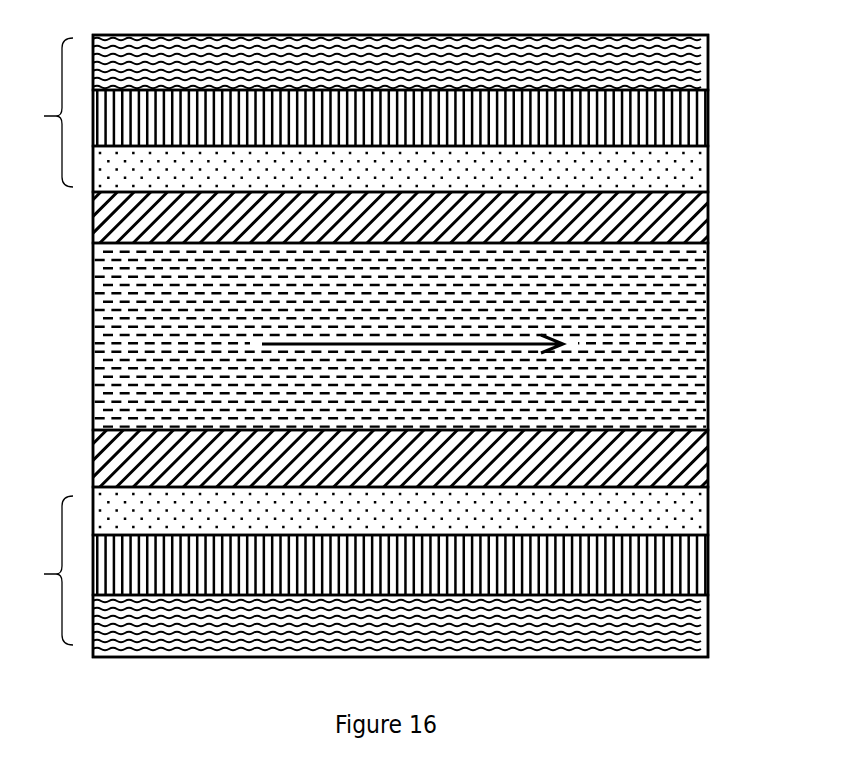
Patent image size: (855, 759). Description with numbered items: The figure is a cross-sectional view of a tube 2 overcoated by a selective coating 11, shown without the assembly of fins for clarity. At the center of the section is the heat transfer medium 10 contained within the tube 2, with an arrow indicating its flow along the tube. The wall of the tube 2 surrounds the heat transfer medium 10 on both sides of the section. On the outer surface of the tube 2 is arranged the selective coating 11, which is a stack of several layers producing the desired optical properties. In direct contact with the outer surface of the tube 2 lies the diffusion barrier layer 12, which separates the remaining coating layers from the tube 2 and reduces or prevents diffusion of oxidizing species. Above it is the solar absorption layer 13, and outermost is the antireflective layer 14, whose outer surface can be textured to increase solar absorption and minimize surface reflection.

The tube 2 is at (708, 230).
The heat transfer medium 10 is at (708, 300).
The selective coating 11 is at (42, 341).
The diffusion barrier layer 12 is at (708, 176).
The solar absorption layer 13 is at (708, 117).
The antireflective layer 14 is at (708, 60).